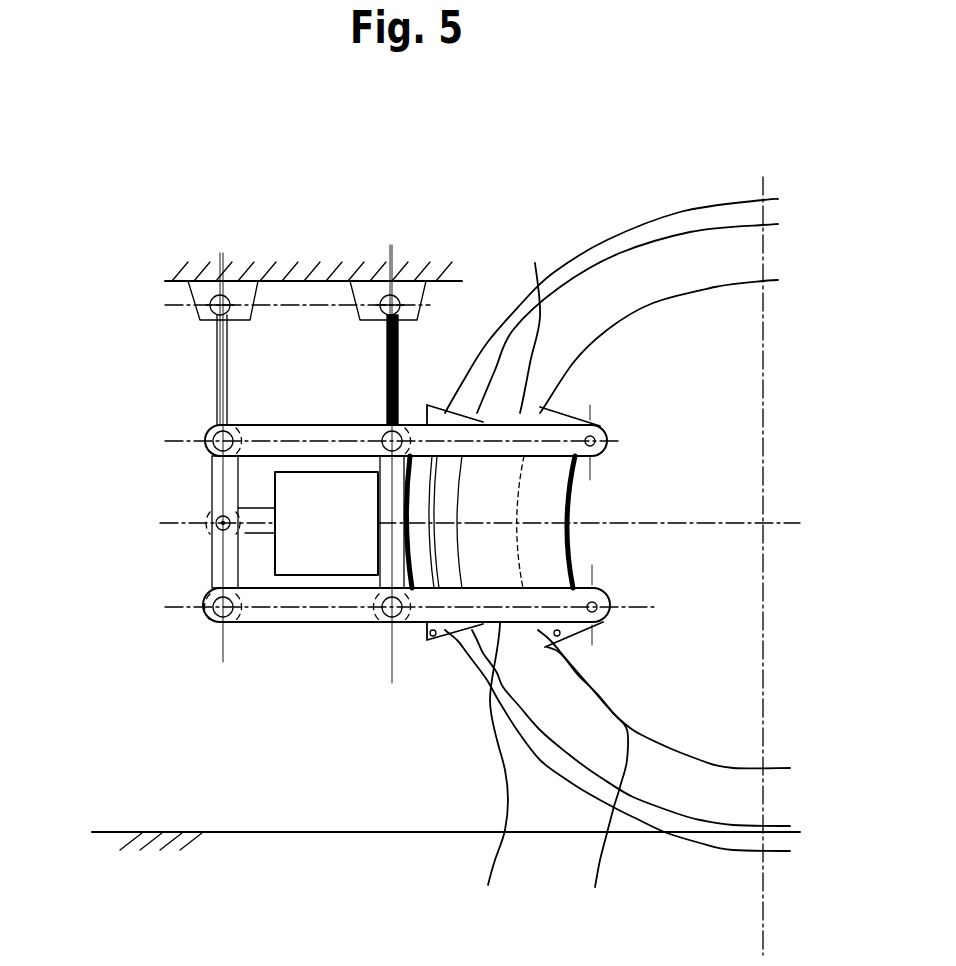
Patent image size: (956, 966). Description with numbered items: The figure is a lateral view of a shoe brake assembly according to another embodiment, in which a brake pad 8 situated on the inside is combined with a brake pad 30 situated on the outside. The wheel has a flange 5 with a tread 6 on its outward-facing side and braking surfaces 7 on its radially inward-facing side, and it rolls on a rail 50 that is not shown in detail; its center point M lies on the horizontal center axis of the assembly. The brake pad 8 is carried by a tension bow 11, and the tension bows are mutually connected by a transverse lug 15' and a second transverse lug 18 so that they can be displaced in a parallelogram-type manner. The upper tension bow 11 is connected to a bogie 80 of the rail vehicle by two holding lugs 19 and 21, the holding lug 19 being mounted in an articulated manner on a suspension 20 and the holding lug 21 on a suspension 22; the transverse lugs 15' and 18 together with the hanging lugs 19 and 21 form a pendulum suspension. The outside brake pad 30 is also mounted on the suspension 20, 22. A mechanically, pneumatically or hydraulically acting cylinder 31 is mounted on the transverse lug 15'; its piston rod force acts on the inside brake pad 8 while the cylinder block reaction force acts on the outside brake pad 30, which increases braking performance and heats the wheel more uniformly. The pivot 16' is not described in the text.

The bogie 80 is at (363, 419).
The suspension 22 is at (215, 294).
The holding lug 21 is at (227, 350).
The holding lug 19 is at (380, 340).
The suspension 20 is at (413, 290).
The tension bow 11 is at (505, 592).
The flange 5 is at (606, 240).
The tread 6 is at (660, 243).
The surfaces 7 is at (607, 330).
The brake pad 8 is at (587, 796).
The center point M is at (765, 527).
The pivot joint 16' is at (173, 496).
The second transverse lug 18 is at (218, 543).
The cylinder 31 is at (293, 557).
The transverse lug 15' is at (282, 585).
The brake pad 30 is at (430, 633).
The rail 50 is at (237, 832).